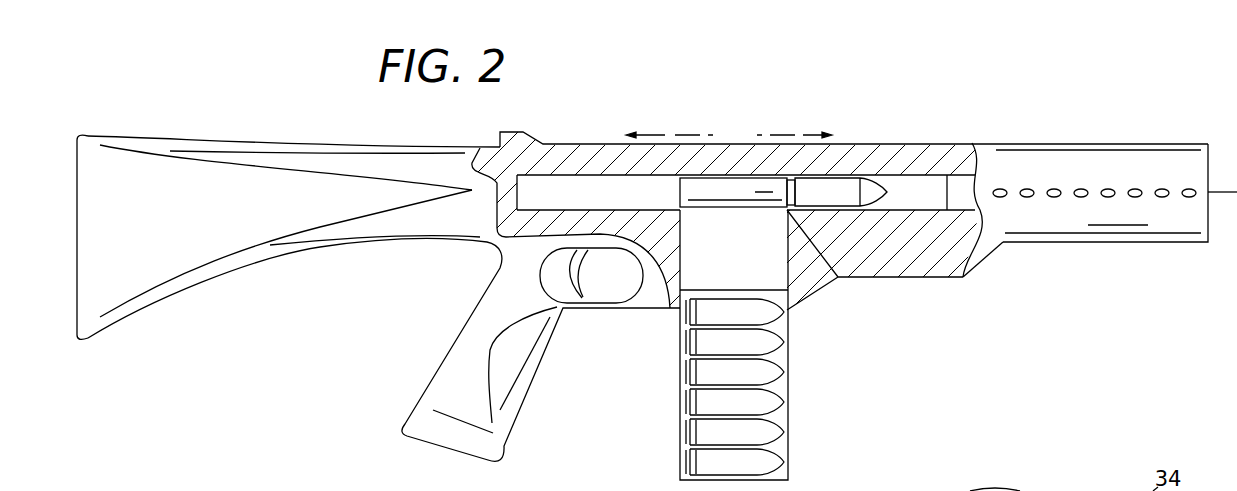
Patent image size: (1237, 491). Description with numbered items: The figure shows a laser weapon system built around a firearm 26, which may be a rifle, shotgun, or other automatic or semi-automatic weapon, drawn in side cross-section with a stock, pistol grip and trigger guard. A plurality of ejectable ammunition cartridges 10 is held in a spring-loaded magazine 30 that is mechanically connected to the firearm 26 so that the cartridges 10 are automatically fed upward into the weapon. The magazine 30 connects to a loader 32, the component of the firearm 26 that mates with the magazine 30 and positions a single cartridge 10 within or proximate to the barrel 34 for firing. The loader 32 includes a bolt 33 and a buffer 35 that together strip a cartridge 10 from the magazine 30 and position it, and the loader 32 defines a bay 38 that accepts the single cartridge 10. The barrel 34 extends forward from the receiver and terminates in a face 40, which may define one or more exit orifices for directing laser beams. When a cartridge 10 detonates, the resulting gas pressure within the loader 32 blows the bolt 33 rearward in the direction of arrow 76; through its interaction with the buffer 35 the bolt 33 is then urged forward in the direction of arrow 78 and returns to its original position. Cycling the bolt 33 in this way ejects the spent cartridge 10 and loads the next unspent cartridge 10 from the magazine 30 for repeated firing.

The ejectable ammunition cartridge 10 is at (829, 182).
The firearm 26 is at (936, 111).
The magazine 30 is at (788, 388).
The loader 32 is at (795, 250).
The bolt 33 is at (730, 188).
The barrel 34 is at (1062, 143).
The buffer 35 is at (603, 188).
The bay 38 is at (905, 200).
The face 40 is at (1208, 217).
The arrow 76 is at (688, 134).
The arrow 78 is at (773, 134).